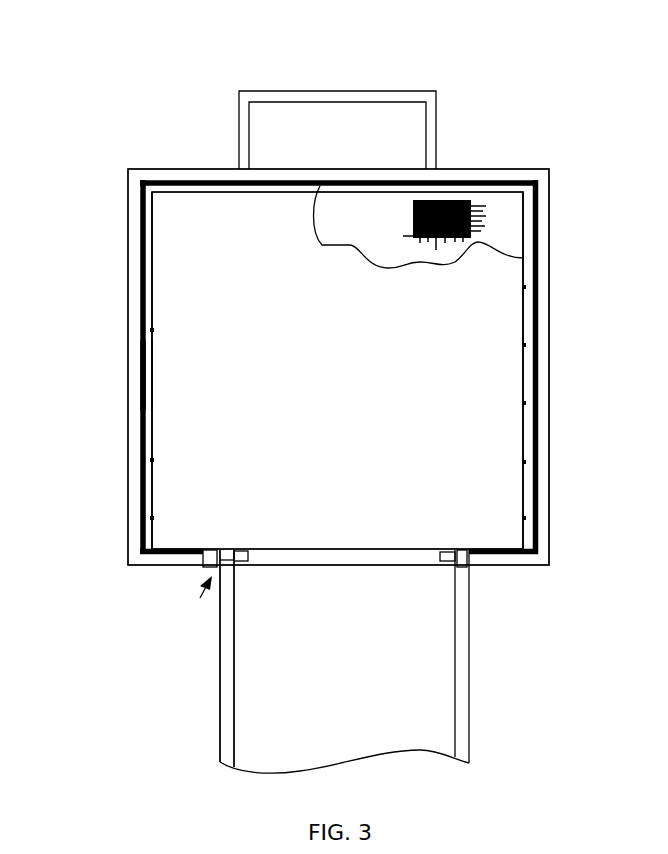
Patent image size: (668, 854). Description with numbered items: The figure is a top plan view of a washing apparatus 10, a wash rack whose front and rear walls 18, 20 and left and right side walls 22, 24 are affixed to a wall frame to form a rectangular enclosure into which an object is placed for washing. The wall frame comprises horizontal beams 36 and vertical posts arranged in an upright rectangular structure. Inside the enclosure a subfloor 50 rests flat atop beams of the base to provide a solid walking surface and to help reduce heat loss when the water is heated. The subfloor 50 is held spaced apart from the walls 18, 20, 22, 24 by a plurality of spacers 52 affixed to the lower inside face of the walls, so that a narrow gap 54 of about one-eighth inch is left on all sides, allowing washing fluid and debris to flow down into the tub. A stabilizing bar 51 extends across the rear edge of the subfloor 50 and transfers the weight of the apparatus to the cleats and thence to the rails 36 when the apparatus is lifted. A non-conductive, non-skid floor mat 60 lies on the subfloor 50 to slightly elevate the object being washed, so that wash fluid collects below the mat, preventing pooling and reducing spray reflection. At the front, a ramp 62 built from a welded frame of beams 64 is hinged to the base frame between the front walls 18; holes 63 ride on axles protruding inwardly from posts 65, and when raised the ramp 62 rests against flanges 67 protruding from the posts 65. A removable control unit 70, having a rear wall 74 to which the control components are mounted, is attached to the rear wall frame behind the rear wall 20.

The washing apparatus 10 is at (74, 79).
The front wall 18 is at (170, 556).
The rear wall 20 is at (214, 180).
The left side wall 22 is at (142, 500).
The right side wall 24 is at (533, 325).
The horizontal beams 36 is at (133, 248).
The subfloor 50 is at (337, 370).
The stabilizing bar 51 is at (176, 187).
The spacers 52 is at (150, 345).
The gap 54 is at (140, 447).
The floor mat 60 is at (419, 227).
The ramp 62 is at (344, 661).
The holes 63 is at (194, 600).
The beams 64 is at (228, 720).
The posts 65 is at (210, 550).
The flanges 67 is at (243, 552).
The control unit 70 is at (290, 97).
The rear wall 74 is at (342, 168).